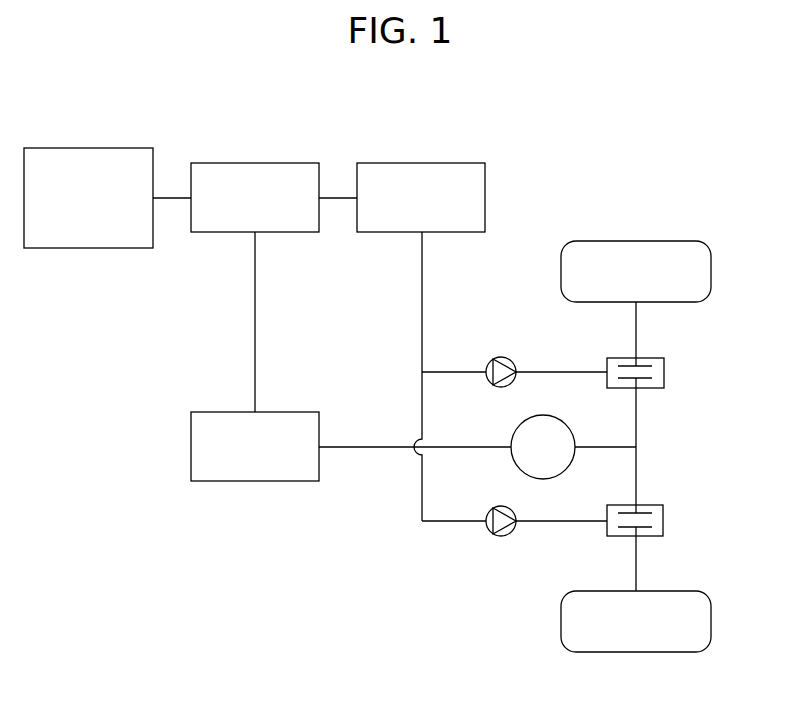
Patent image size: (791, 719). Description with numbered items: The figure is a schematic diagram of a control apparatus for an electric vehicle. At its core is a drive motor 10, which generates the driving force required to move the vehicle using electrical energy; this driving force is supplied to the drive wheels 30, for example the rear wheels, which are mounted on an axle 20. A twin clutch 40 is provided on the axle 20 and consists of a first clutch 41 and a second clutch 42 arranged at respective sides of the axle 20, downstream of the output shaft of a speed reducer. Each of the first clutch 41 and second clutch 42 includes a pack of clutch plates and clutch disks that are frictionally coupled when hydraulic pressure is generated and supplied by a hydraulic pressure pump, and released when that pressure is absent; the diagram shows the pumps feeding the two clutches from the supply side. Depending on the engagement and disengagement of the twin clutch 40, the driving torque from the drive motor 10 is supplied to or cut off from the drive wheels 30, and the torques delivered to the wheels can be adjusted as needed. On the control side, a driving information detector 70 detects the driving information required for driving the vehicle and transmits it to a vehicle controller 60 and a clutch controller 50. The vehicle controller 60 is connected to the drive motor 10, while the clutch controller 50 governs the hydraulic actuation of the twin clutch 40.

The drive motor 10 is at (255, 481).
The axle 20 is at (636, 560).
The drive wheels 30 is at (711, 272).
The twin clutch 40 is at (733, 362).
The first clutch 41 is at (664, 370).
The second clutch 42 is at (663, 519).
The clutch controller 50 is at (422, 163).
The vehicle controller 60 is at (255, 163).
The driving information detector 70 is at (88, 148).